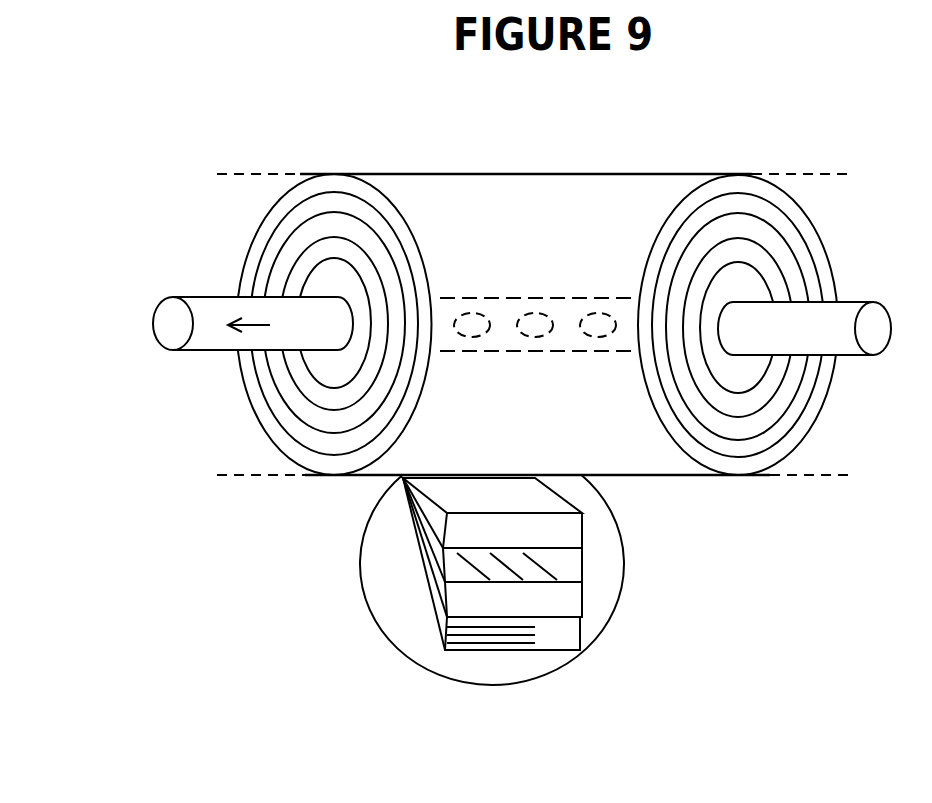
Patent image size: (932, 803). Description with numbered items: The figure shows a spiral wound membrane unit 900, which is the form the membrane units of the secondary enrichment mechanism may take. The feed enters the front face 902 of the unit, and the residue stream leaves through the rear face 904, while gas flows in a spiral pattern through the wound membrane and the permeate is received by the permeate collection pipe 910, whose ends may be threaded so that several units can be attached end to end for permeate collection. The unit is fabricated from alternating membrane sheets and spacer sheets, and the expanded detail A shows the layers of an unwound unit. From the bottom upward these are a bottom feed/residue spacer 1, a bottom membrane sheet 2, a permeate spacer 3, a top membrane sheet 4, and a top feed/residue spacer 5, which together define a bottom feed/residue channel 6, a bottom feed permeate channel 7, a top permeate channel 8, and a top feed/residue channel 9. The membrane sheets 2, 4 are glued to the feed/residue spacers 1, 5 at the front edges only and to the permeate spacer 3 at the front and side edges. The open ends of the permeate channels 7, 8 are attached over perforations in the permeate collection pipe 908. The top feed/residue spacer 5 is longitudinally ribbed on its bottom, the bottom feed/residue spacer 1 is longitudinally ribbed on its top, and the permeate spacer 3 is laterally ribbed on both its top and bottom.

The spiral wound membrane unit 900 is at (645, 173).
The front face 902 is at (237, 415).
The rear face 904 is at (835, 420).
The permeate collection pipe 908 is at (478, 345).
The permeate collection pipe 910 is at (210, 270).
The detail A is at (622, 625).
The bottom feed/residue spacer 1 is at (437, 645).
The bottom membrane sheet 2 is at (438, 603).
The permeate spacer 3 is at (432, 567).
The top membrane sheet 4 is at (432, 528).
The top feed/residue spacer 5 is at (430, 503).
The bottom feed/residue channel 6 is at (567, 635).
The bottom feed permeate channel 7 is at (560, 605).
The top permeate channel 8 is at (567, 568).
The top feed/residue channel 9 is at (560, 533).